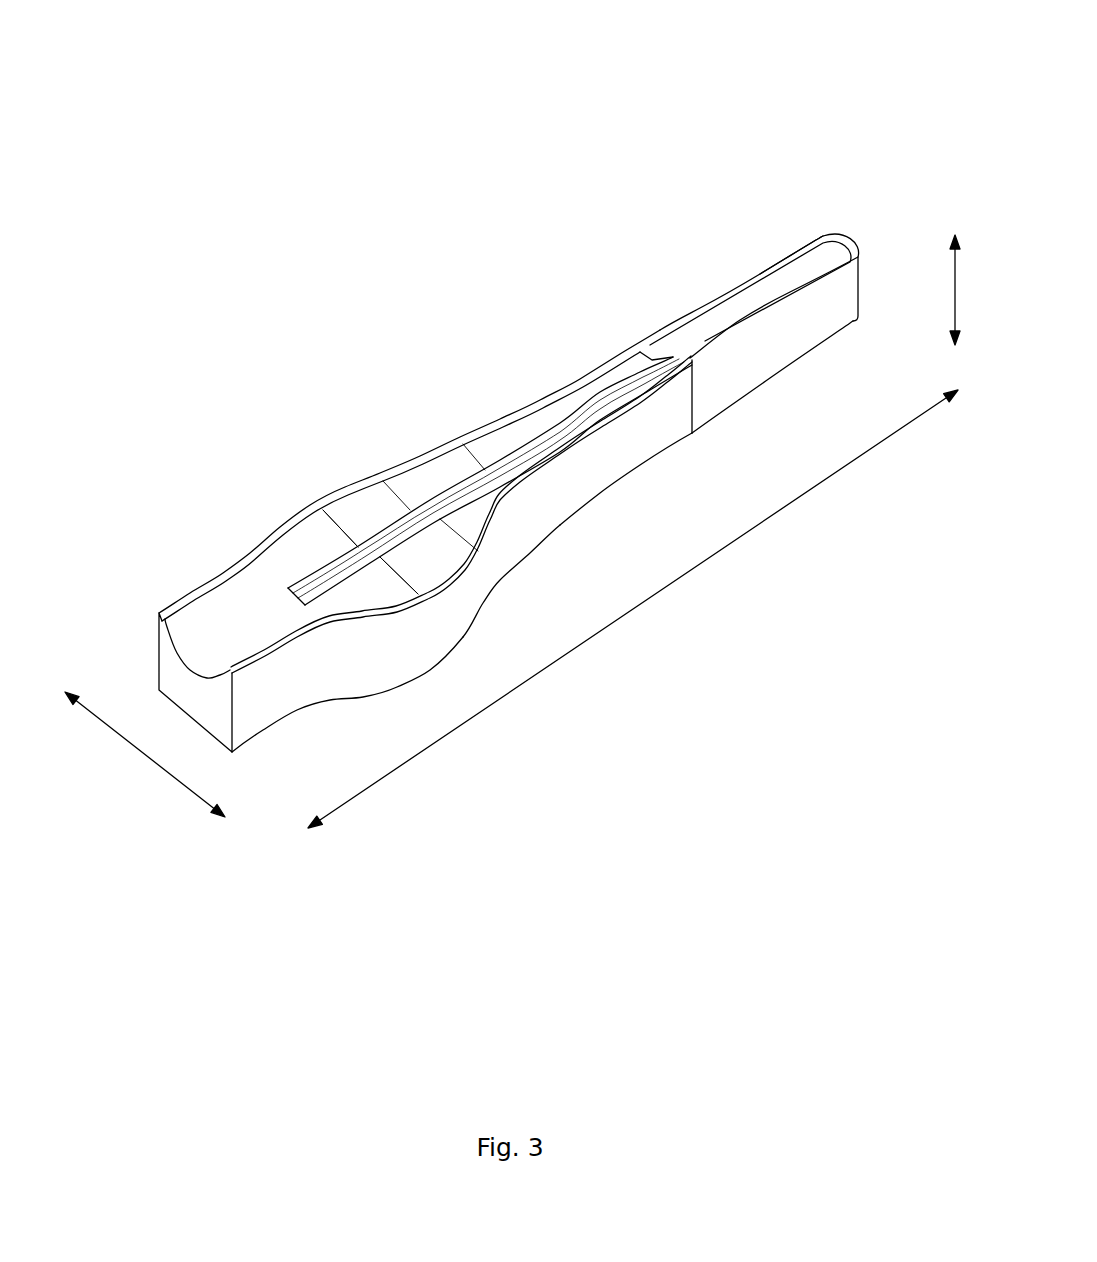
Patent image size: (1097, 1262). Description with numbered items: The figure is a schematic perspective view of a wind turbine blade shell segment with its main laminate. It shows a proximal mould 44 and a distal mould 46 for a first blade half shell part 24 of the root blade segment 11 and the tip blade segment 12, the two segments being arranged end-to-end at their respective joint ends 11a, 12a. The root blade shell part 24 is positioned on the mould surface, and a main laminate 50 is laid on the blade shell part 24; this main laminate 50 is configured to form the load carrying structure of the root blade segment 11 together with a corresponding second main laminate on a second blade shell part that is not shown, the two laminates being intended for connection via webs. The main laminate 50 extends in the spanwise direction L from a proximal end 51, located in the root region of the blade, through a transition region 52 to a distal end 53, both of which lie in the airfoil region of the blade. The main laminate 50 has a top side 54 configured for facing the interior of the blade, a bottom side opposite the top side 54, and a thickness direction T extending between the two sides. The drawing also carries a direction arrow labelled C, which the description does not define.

The root blade segment 11 is at (478, 488).
The joint end 11a is at (625, 342).
The tip blade segment 12 is at (573, 311).
The joint end 12a is at (640, 340).
The root blade shell part 24 is at (200, 630).
The proximal mould 44 is at (271, 530).
The distal mould 46 is at (690, 322).
The main laminate 50 is at (426, 488).
The proximal end 51 is at (297, 600).
The transition region 52 is at (500, 492).
The distal end 53 is at (668, 363).
The top side 54 is at (373, 537).
The thickness direction T is at (954, 310).
The spanwise direction L is at (665, 590).
The width direction C is at (140, 751).